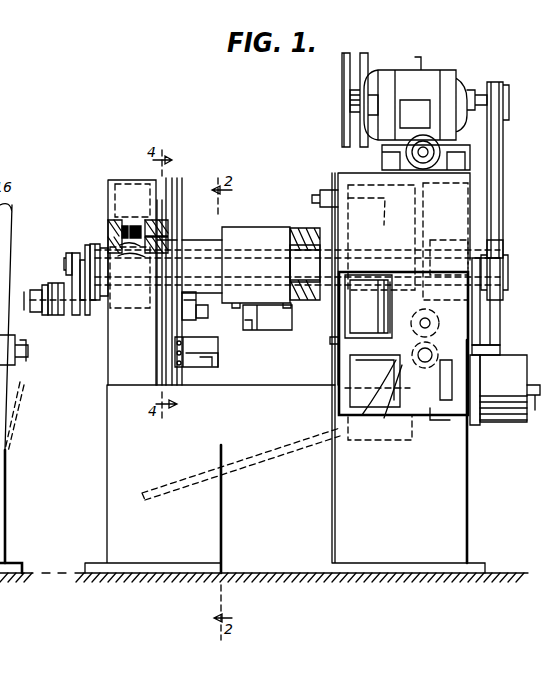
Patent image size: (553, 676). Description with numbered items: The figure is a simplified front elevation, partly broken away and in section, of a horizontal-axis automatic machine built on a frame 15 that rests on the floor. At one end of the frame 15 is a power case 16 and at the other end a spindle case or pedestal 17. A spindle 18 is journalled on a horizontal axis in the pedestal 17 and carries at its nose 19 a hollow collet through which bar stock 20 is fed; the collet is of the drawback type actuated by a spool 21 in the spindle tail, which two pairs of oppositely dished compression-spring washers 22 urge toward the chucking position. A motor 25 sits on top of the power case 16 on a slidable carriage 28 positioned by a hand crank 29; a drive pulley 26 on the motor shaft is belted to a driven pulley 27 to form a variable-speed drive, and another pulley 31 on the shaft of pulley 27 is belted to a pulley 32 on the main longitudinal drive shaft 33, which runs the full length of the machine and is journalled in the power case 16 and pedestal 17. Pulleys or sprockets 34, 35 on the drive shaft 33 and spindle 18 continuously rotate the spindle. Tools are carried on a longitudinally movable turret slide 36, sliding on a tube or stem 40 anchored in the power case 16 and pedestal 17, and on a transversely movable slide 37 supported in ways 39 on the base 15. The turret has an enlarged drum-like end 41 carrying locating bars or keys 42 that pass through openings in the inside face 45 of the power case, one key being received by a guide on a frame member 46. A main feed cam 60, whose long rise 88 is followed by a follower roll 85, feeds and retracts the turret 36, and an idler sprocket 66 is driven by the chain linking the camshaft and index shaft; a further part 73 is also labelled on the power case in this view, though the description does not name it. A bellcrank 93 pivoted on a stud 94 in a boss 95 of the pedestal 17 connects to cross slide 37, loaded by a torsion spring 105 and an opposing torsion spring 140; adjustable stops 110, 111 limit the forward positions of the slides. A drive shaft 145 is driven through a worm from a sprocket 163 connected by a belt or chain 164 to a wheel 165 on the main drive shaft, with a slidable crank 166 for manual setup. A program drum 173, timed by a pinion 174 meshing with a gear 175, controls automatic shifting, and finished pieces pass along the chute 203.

The frame 15 is at (6, 487).
The power case 16 is at (343, 178).
The spindle case or pedestal 17 is at (120, 180).
The spindle 18 is at (98, 330).
The nose 19 is at (192, 298).
The stock 20 is at (22, 300).
The spool 21 is at (44, 288).
The compression-spring washers 22 is at (58, 330).
The motor 25 is at (428, 72).
The drive pulley 26 is at (342, 112).
The driven pulley 27 is at (342, 62).
The slidable carriage 28 is at (456, 162).
The hand crank 29 is at (426, 165).
The pulley 31 is at (509, 88).
The pulley 32 is at (508, 248).
The main longitudinal drive shaft 33 is at (66, 262).
The pulley or sprocket 34 is at (66, 253).
The pulley or sprocket 35 is at (70, 285).
The longitudinally movable slide 36 is at (240, 232).
The transversely movable slide 37 is at (218, 342).
The transverse guides or ways 39 is at (214, 360).
The tube or stem 40 is at (290, 262).
The drum-like end 41 is at (378, 198).
The locating bar or key 42 is at (360, 185).
The inside face 45 is at (338, 372).
The frame member 46 is at (320, 196).
The main feed cam 60 is at (373, 415).
The idler sprocket 66 is at (440, 328).
The pin 73 is at (330, 341).
The follower roll 85 is at (398, 365).
The rise 88 is at (400, 392).
The bellcrank 93 is at (172, 255).
The stud or rock shaft 94 is at (172, 225).
The boss 95 is at (178, 200).
The torsion spring 105 is at (138, 225).
The adjustable stop means 110 is at (179, 365).
The adjustable stop means 111 is at (26, 357).
The torsion-spring means 140 is at (130, 259).
The drive shaft 145 is at (386, 322).
The pulley or sprocket 163 is at (499, 336).
The belt or chain 164 is at (480, 300).
The wheel 165 is at (460, 214).
The slidable handle or crank 166 is at (430, 420).
The timing cam or program drum 173 is at (500, 370).
The pinion 174 is at (485, 360).
The gear 175 is at (503, 408).
The chute 203 is at (188, 472).